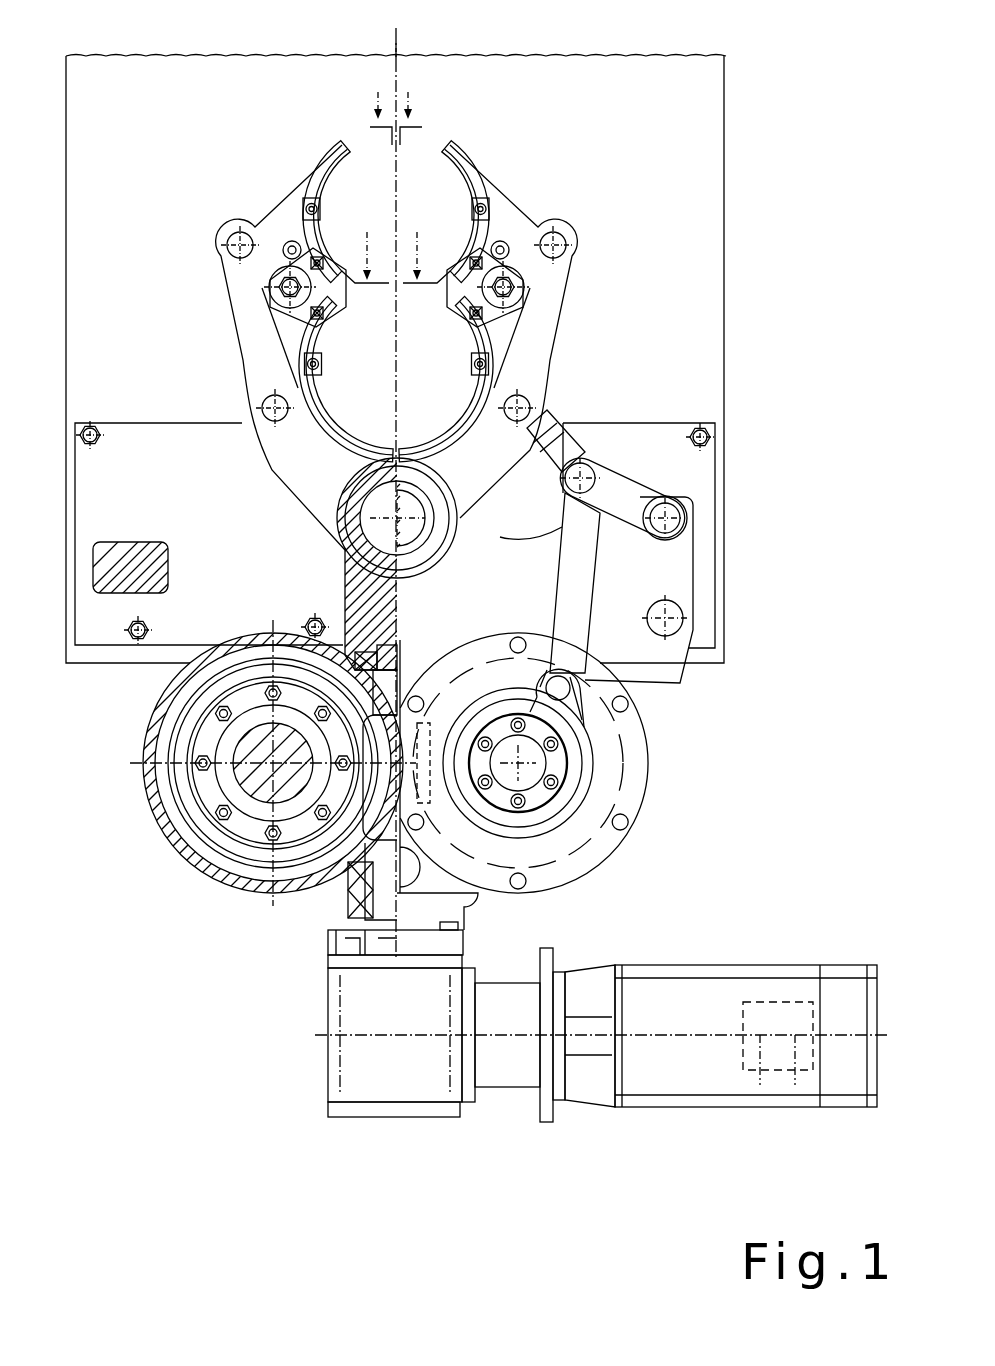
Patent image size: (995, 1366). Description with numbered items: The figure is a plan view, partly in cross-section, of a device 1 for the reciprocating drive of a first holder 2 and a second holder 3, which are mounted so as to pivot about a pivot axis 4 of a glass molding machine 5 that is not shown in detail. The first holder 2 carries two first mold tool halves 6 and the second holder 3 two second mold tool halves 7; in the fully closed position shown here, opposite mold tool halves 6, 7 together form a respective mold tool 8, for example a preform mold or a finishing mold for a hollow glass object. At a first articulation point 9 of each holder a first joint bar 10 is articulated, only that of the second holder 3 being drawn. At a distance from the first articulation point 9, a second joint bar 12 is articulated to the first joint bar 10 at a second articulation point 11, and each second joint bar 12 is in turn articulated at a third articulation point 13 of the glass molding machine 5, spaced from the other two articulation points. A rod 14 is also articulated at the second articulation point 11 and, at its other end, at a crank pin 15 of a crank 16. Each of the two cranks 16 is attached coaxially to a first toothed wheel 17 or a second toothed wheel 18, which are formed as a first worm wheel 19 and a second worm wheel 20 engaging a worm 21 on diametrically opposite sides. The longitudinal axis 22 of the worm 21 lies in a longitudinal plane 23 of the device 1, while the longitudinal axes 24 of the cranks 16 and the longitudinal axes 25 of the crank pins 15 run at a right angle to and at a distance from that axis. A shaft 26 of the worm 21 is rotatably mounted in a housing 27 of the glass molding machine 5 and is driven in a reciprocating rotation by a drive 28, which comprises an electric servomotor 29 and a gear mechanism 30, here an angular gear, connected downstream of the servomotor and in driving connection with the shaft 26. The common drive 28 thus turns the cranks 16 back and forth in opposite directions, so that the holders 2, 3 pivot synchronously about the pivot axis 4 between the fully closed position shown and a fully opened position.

The device 1 is at (250, 953).
The first holder 2 is at (242, 367).
The second holder 3 is at (541, 362).
The pivot axis 4 is at (405, 522).
The glass molding machine 5 is at (728, 216).
The first mold tool halves 6 is at (362, 133).
The second mold tool halves 7 is at (425, 133).
The mold tool 8 is at (388, 93).
The first articulation point 9 is at (262, 408).
The first joint bar 10 is at (575, 430).
The second articulation point 11 is at (610, 452).
The second joint bar 12 is at (628, 492).
The third articulation point 13 is at (700, 500).
The rod 14 is at (578, 567).
The crank pin 15 is at (580, 685).
The crank 16 is at (572, 717).
The first toothed wheel 17 is at (185, 826).
The second toothed wheel 18 is at (593, 841).
The first worm wheel 19 is at (232, 862).
The second worm wheel 20 is at (580, 887).
The worm 21 is at (383, 790).
The longitudinal axis of the worm 22 is at (405, 675).
The longitudinal plane 23 is at (398, 42).
The longitudinal axes of the cranks 24 is at (270, 763).
The longitudinal axes of the crank pins 25 is at (600, 700).
The shaft 26 is at (386, 660).
The housing 27 is at (343, 584).
The drive 28 is at (588, 1108).
The electric servomotor 29 is at (717, 1100).
The gear mechanism 30 is at (337, 1062).